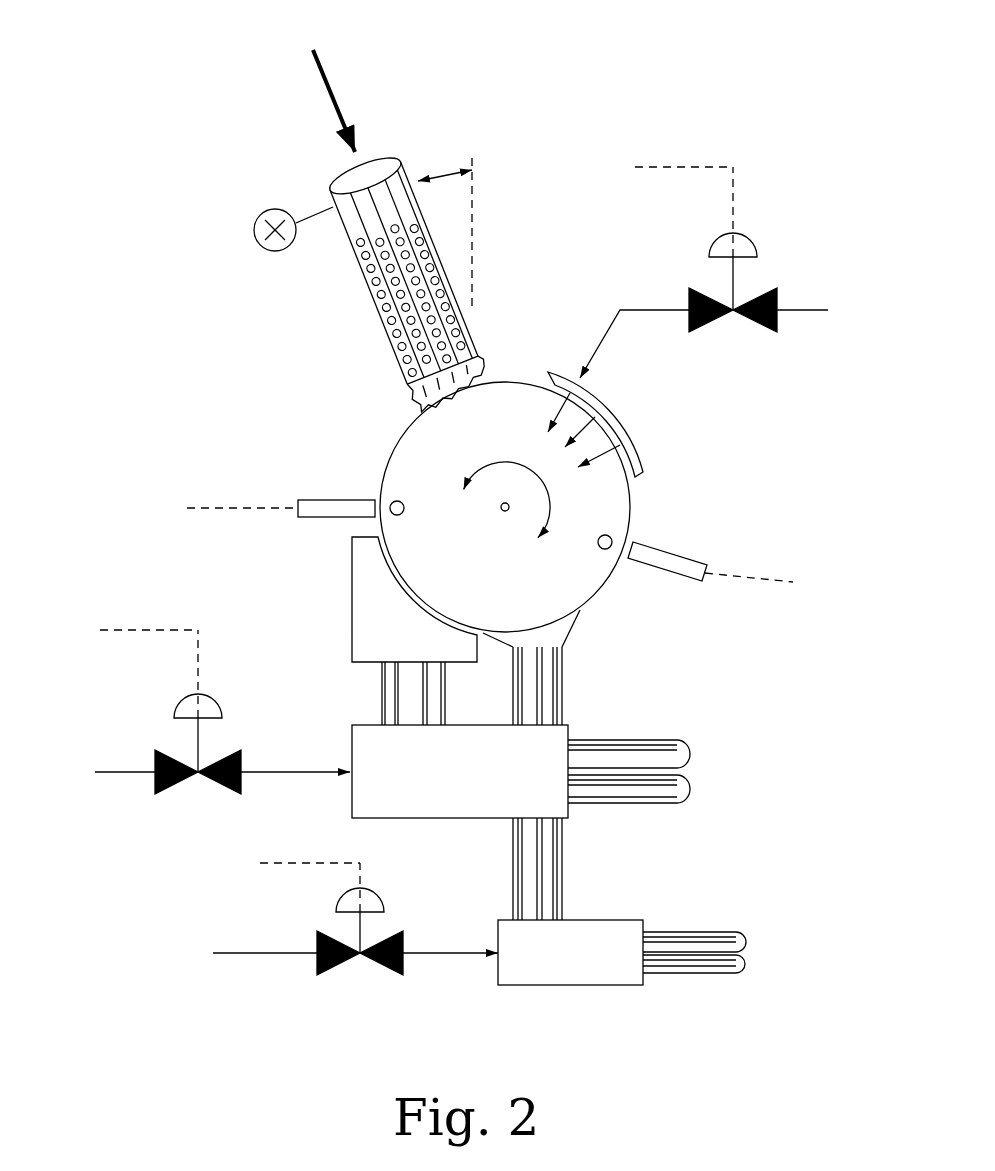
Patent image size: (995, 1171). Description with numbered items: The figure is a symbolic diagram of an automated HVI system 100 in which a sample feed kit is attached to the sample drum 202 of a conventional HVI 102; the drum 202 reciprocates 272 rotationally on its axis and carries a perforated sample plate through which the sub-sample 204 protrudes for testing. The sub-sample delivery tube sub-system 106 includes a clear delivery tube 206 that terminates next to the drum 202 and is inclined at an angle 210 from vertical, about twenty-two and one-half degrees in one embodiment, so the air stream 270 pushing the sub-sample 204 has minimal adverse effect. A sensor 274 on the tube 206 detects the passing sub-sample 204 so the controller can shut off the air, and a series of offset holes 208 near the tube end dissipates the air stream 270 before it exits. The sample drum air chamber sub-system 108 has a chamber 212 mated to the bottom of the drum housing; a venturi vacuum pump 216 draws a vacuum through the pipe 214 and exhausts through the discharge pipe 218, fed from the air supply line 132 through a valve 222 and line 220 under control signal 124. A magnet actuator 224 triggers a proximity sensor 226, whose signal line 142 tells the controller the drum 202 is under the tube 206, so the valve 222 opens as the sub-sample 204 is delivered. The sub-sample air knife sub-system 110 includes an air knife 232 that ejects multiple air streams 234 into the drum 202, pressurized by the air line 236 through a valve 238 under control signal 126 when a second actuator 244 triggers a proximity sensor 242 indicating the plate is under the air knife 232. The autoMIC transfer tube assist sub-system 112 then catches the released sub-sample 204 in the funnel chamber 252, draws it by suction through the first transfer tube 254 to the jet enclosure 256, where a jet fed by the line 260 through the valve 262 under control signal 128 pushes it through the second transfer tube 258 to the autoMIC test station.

The automated HVI system 100 is at (175, 92).
The HVI 102 is at (295, 423).
The sub-sample delivery tube sub-system 106 is at (207, 291).
The sample drum air chamber sub-system 108 is at (120, 530).
The sub-sample air knife sub-system 110 is at (545, 105).
The autoMIC transfer tube assist sub-system 112 is at (752, 1030).
The control signal 124 is at (133, 628).
The control signal 126 is at (667, 165).
The control signal 128 is at (285, 872).
The air supply line 132 is at (808, 312).
The signal line 142 is at (240, 512).
The sample drum 202 is at (440, 478).
The sub-sample 204 is at (485, 367).
The delivery tube 206 is at (403, 284).
The holes 208 is at (387, 300).
The angle 210 is at (443, 173).
The chamber 212 is at (350, 555).
The pipe 214 is at (380, 702).
The venturi vacuum pump 216 is at (428, 818).
The discharge pipe 218 is at (665, 803).
The line 220 is at (312, 773).
The valve 222 is at (225, 787).
The actuator 224 is at (404, 510).
The proximity sensor 226 is at (333, 498).
The air knife 232 is at (645, 466).
The air streams 234 is at (548, 412).
The air line 236 is at (590, 370).
The valve 238 is at (745, 333).
The proximity sensor 242 is at (696, 562).
The actuator 244 is at (598, 548).
The funnel chamber 252 is at (582, 616).
The first transfer tube 254 is at (564, 682).
The jet enclosure 256 is at (582, 987).
The second transfer tube 258 is at (718, 973).
The line 260 is at (448, 955).
The valve 262 is at (382, 967).
The air stream 270 is at (326, 78).
The reciprocating rotation 272 is at (548, 518).
The sensor 274 is at (273, 208).